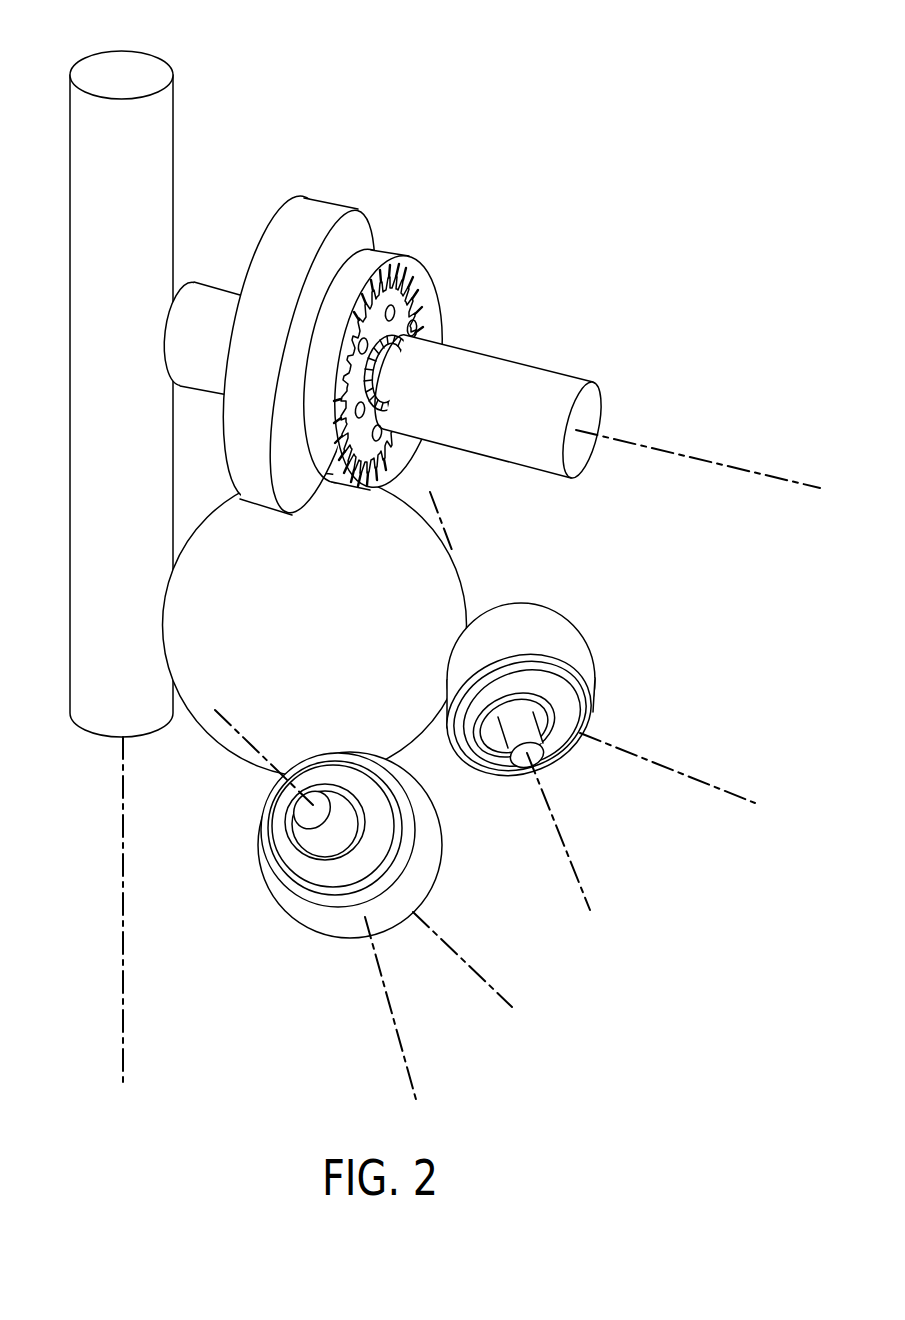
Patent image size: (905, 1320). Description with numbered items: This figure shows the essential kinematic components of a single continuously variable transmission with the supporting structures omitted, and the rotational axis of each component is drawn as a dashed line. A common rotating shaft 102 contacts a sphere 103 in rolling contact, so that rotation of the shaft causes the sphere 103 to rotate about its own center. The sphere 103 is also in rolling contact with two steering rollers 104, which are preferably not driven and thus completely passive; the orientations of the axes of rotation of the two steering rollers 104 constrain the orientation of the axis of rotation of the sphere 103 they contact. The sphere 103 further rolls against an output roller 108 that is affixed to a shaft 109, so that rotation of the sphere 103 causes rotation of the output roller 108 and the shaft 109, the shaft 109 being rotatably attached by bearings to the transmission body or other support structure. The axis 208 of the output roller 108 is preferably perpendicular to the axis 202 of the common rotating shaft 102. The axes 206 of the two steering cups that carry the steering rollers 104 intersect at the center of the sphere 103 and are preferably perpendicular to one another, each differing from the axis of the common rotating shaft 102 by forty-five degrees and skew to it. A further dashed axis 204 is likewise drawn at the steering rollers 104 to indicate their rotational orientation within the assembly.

The common rotating shaft 102 is at (124, 68).
The sphere 103 is at (412, 523).
The steering roller 104 is at (553, 635).
The output roller 108 is at (312, 218).
The shaft 109 is at (208, 292).
The axis of common rotating shaft 202 is at (146, 967).
The axis 204 is at (586, 826).
The axis of steering cup 206 is at (675, 748).
The axis of output roller 208 is at (680, 430).